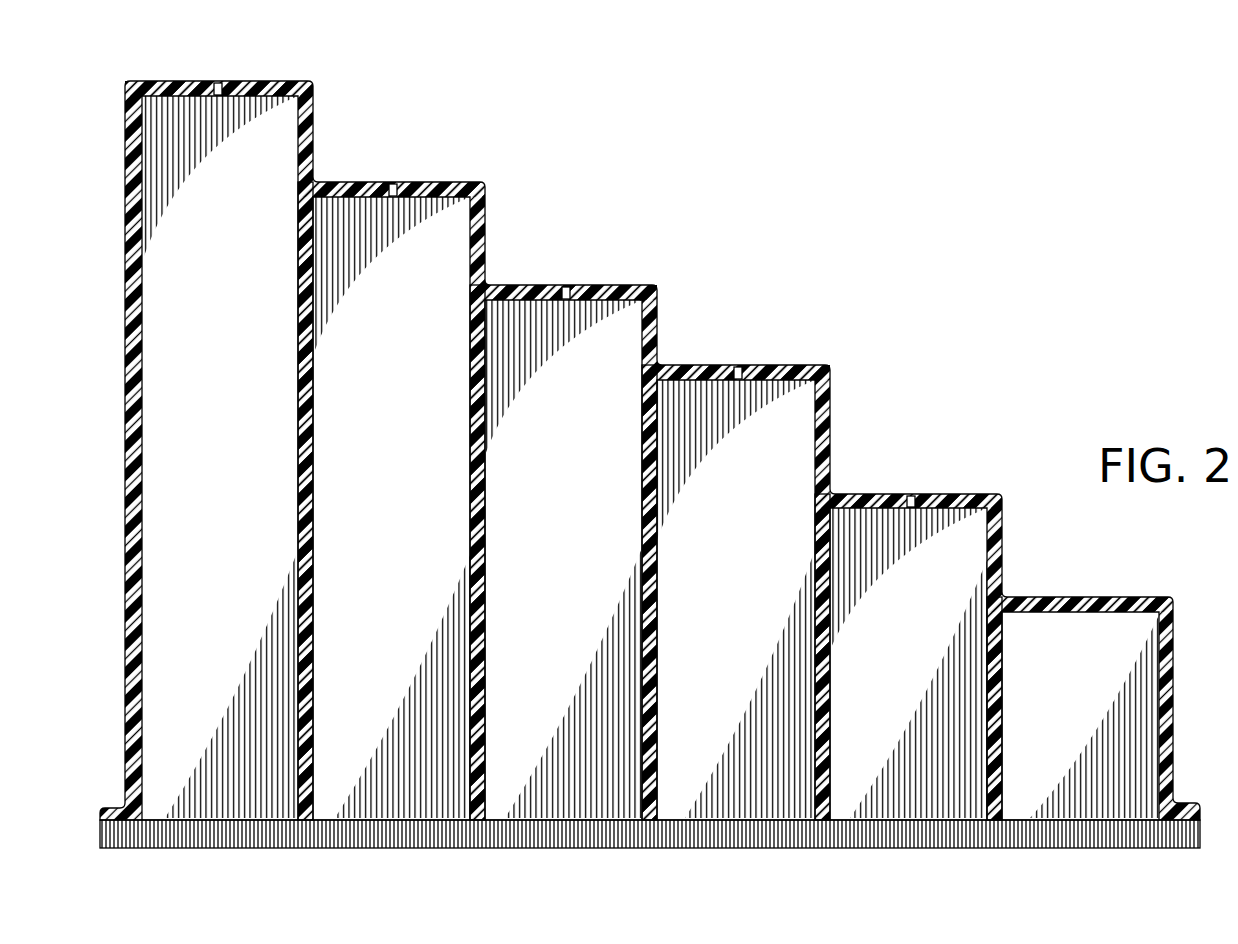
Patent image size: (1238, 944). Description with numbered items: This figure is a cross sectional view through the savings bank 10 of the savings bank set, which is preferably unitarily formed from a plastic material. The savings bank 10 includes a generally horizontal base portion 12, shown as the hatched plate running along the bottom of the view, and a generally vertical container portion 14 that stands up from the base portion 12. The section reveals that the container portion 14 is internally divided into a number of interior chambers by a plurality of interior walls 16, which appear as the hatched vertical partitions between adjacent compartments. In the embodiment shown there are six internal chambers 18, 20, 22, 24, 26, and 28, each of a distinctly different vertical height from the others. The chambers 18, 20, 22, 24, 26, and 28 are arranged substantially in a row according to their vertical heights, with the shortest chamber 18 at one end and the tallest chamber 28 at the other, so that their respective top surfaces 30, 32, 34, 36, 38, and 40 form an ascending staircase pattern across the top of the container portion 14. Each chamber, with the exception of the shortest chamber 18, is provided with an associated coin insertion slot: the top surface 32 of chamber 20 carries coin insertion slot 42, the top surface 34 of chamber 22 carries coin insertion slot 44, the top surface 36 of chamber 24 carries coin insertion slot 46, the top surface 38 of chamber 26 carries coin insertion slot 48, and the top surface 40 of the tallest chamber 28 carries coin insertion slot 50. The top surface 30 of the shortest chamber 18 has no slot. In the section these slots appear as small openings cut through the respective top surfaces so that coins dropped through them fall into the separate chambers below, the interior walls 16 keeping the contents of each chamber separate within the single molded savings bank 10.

The savings bank 10 is at (940, 320).
The base portion 12 is at (272, 859).
The container portion 14 is at (813, 268).
The interior walls 16 is at (305, 508).
The internal chamber 18 is at (1056, 668).
The internal chamber 20 is at (884, 643).
The internal chamber 22 is at (716, 503).
The internal chamber 24 is at (544, 428).
The internal chamber 26 is at (372, 319).
The internal chamber 28 is at (196, 214).
The top surface 30 is at (1108, 600).
The top surface 32 is at (955, 497).
The top surface 34 is at (793, 368).
The top surface 36 is at (605, 288).
The top surface 38 is at (432, 185).
The top surface 40 is at (258, 84).
The coin insertion slot 42 is at (911, 496).
The coin insertion slot 44 is at (738, 367).
The coin insertion slot 46 is at (566, 287).
The coin insertion slot 48 is at (393, 183).
The coin insertion slot 50 is at (218, 83).